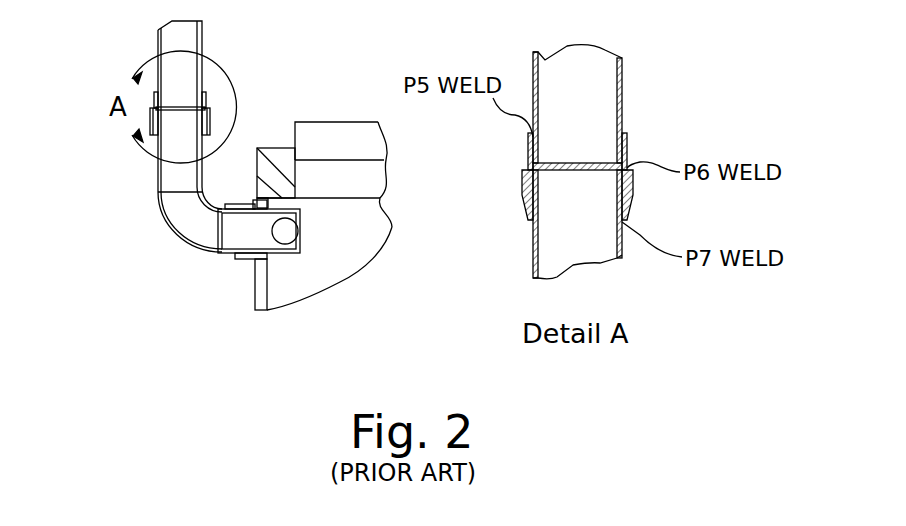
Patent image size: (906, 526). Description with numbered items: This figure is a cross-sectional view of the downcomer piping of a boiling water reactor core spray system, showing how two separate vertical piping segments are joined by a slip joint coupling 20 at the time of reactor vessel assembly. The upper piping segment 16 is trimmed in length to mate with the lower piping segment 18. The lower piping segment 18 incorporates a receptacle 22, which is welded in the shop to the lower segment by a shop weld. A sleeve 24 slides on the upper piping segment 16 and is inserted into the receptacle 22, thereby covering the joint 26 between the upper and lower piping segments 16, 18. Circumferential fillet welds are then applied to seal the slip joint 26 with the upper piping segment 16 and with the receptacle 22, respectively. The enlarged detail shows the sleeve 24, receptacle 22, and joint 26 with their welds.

The upper piping segment 16 is at (173, 37).
The lower piping segment 18 is at (173, 179).
The slip joint coupling 20 is at (247, 90).
The receptacle 22 is at (628, 210).
The sleeve 24 is at (627, 138).
The joint 26 is at (567, 170).